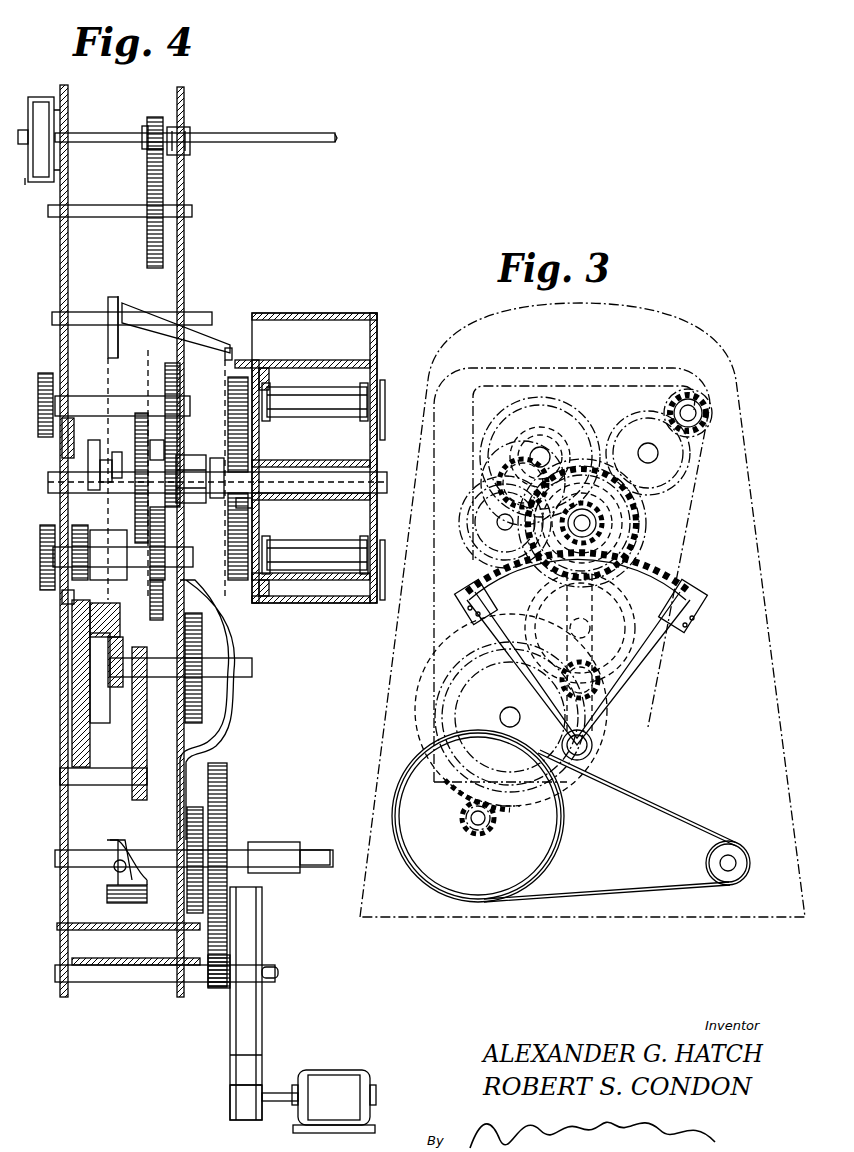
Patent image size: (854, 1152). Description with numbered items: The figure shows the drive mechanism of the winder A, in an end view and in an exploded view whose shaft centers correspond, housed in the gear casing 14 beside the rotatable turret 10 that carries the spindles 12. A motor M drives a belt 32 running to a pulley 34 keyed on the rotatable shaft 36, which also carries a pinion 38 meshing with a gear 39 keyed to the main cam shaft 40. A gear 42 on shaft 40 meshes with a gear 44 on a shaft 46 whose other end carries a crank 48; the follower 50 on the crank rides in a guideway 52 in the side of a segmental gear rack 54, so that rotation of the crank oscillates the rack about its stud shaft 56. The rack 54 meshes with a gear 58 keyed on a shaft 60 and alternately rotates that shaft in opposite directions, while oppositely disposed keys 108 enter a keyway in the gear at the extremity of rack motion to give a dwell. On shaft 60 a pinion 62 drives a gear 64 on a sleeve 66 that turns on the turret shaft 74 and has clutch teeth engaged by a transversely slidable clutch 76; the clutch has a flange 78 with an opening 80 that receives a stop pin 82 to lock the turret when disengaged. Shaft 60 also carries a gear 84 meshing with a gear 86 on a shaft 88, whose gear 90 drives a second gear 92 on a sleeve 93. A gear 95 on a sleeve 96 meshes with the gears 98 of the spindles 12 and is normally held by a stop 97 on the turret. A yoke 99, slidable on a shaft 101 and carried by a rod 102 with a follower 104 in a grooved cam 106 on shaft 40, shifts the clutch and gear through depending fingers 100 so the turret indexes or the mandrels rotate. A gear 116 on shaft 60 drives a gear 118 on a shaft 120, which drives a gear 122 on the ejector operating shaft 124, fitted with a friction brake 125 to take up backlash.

In FIG. 4, the gear casing 14 is at (60, 262).
In FIG. 3, the gear casing 14 is at (577, 368).
In FIG. 4, the friction brake 125 is at (42, 120).
In FIG. 4, the ejector operating shaft 124 is at (258, 142).
In FIG. 3, the ejector operating shaft 124 is at (690, 413).
In FIG. 4, the gear 122 is at (150, 118).
In FIG. 3, the gear 122 is at (702, 428).
In FIG. 4, the gear 118 is at (163, 243).
In FIG. 3, the gear 118 is at (690, 440).
In FIG. 4, the shaft 120 is at (192, 208).
In FIG. 3, the shaft 120 is at (648, 453).
In FIG. 4, the yoke 99 is at (165, 318).
In FIG. 4, the shaft 101 is at (205, 318).
In FIG. 4, the depending fingers 100 is at (228, 348).
In FIG. 4, the rod 102 is at (148, 356).
In FIG. 4, the gear 86 is at (44, 372).
In FIG. 3, the gear 86 is at (528, 532).
In FIG. 4, the shaft 88 is at (80, 395).
In FIG. 3, the shaft 88 is at (505, 522).
In FIG. 4, the gear 90 is at (182, 372).
In FIG. 3, the gear 90 is at (481, 478).
In FIG. 4, the gear 64 is at (140, 412).
In FIG. 3, the gear 64 is at (581, 470).
In FIG. 4, the sleeve 66 is at (165, 450).
In FIG. 4, the stop pin 82 is at (62, 447).
In FIG. 4, the opening 80 is at (112, 452).
In FIG. 4, the sleeve 93 is at (188, 456).
In FIG. 4, the flange 78 is at (88, 464).
In FIG. 4, the transversely slidable clutch 76 is at (100, 480).
In FIG. 4, the shaft 74 is at (333, 472).
In FIG. 3, the shaft 74 is at (540, 457).
In FIG. 4, the second gear 92 is at (186, 505).
In FIG. 3, the second gear 92 is at (515, 470).
In FIG. 4, the stop 97 is at (250, 436).
In FIG. 4, the sleeve 96 is at (250, 458).
In FIG. 4, the rotatable turret 10 is at (330, 313).
In FIG. 4, the spindles 12 is at (330, 410).
In FIG. 4, the gears 98 is at (254, 366).
In FIG. 4, the gear 95 is at (252, 514).
In FIG. 4, the pinion 62 is at (148, 556).
In FIG. 3, the pinion 62 is at (582, 523).
In FIG. 4, the gear 58 is at (72, 530).
In FIG. 3, the gear 58 is at (628, 542).
In FIG. 4, the gear 84 is at (40, 560).
In FIG. 3, the gear 84 is at (582, 530).
In FIG. 4, the shaft 60 is at (62, 596).
In FIG. 3, the shaft 60 is at (640, 500).
In FIG. 4, the segmental gear rack 54 is at (72, 716).
In FIG. 3, the segmental gear rack 54 is at (676, 650).
In FIG. 4, the follower 50 is at (90, 630).
In FIG. 3, the follower 50 is at (548, 596).
In FIG. 4, the crank 48 is at (100, 648).
In FIG. 3, the crank 48 is at (620, 606).
In FIG. 4, the guideway 52 is at (95, 672).
In FIG. 3, the guideway 52 is at (592, 650).
In FIG. 4, the gear 116 is at (158, 612).
In FIG. 3, the gear 116 is at (622, 510).
In FIG. 4, the shaft 46 is at (252, 668).
In FIG. 3, the shaft 46 is at (590, 628).
In FIG. 4, the gear 44 is at (202, 708).
In FIG. 3, the gear 44 is at (596, 686).
In FIG. 4, the stud shaft 56 is at (62, 776).
In FIG. 3, the stud shaft 56 is at (580, 748).
In FIG. 4, the gear 42 is at (185, 812).
In FIG. 3, the gear 42 is at (511, 710).
In FIG. 4, the gear 39 is at (226, 804).
In FIG. 3, the gear 39 is at (462, 800).
In FIG. 4, the shaft 40 is at (240, 852).
In FIG. 3, the shaft 40 is at (510, 717).
In FIG. 4, the follower 104 is at (114, 833).
In FIG. 4, the cam 106 is at (110, 885).
In FIG. 4, the pulley 34 is at (262, 948).
In FIG. 3, the pulley 34 is at (558, 830).
In FIG. 4, the pinion 38 is at (220, 988).
In FIG. 3, the pinion 38 is at (495, 824).
In FIG. 4, the rotatable shaft 36 is at (278, 974).
In FIG. 3, the rotatable shaft 36 is at (476, 820).
In FIG. 4, the belt 32 is at (256, 1065).
In FIG. 3, the belt 32 is at (645, 884).
In FIG. 4, the motor M is at (330, 1073).
In FIG. 3, the motor M is at (732, 858).
In FIG. 3, the winder A is at (690, 345).
In FIG. 3, the keys 108 is at (462, 592).